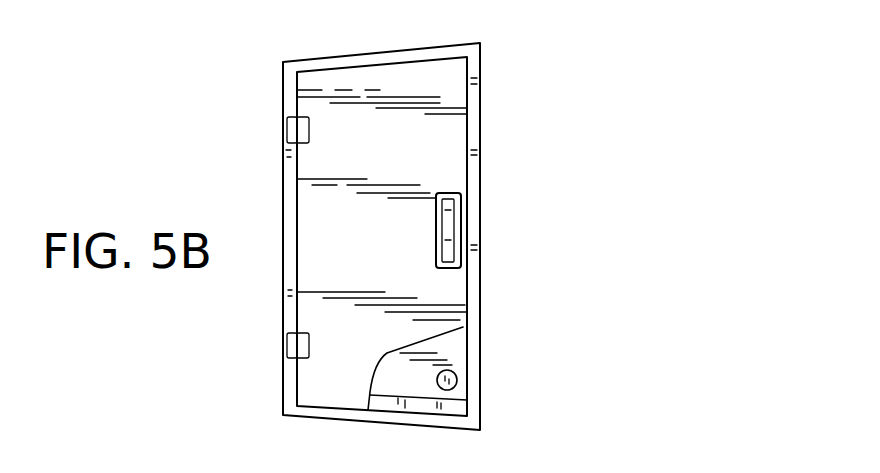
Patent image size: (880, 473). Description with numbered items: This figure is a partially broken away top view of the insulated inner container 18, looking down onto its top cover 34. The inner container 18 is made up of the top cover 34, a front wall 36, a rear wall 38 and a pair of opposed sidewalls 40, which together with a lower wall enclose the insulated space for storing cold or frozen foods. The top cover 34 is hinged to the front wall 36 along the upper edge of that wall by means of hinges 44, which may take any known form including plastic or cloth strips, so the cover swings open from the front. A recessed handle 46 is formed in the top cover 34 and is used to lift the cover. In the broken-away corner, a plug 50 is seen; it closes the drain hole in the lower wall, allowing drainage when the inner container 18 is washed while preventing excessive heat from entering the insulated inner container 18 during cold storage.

The inner container 18 is at (520, 162).
The top cover 34 is at (448, 87).
The front wall 36 is at (288, 308).
The rear wall 38 is at (465, 318).
The pair of opposed sidewalls 40 is at (398, 57).
The hinges 44 is at (290, 132).
The recessed handle 46 is at (450, 238).
The plug 50 is at (457, 375).